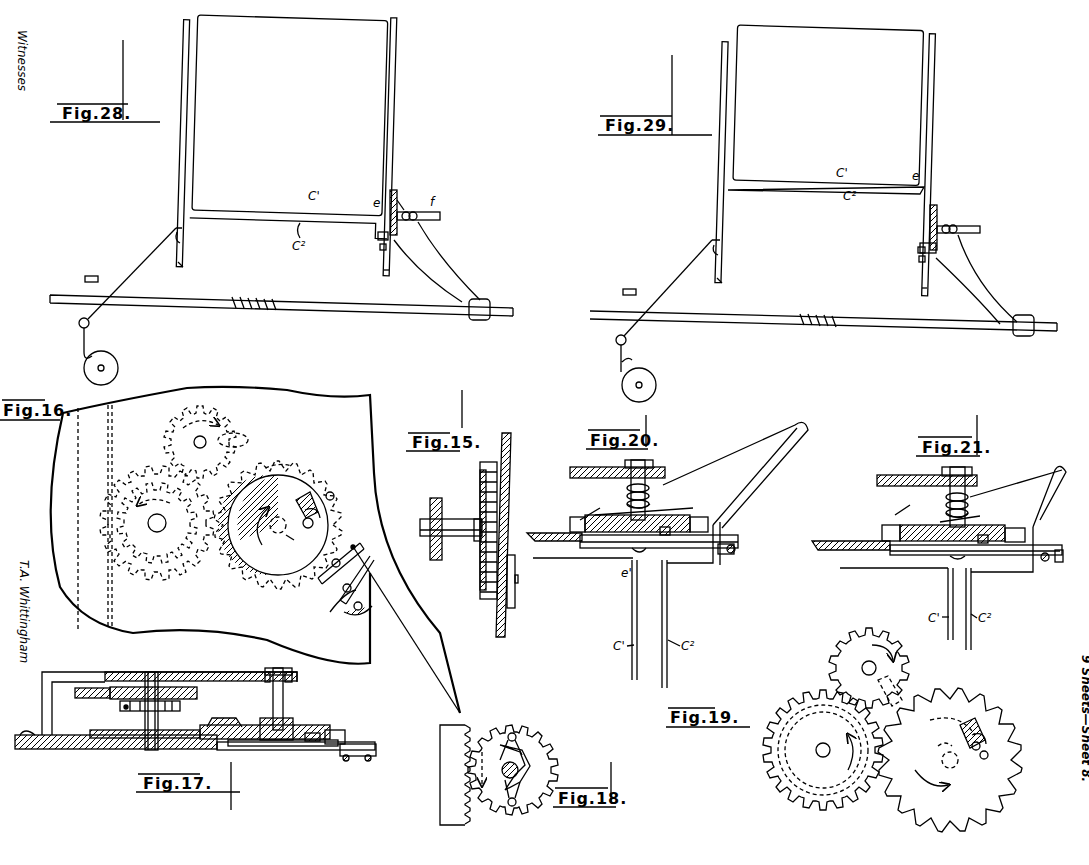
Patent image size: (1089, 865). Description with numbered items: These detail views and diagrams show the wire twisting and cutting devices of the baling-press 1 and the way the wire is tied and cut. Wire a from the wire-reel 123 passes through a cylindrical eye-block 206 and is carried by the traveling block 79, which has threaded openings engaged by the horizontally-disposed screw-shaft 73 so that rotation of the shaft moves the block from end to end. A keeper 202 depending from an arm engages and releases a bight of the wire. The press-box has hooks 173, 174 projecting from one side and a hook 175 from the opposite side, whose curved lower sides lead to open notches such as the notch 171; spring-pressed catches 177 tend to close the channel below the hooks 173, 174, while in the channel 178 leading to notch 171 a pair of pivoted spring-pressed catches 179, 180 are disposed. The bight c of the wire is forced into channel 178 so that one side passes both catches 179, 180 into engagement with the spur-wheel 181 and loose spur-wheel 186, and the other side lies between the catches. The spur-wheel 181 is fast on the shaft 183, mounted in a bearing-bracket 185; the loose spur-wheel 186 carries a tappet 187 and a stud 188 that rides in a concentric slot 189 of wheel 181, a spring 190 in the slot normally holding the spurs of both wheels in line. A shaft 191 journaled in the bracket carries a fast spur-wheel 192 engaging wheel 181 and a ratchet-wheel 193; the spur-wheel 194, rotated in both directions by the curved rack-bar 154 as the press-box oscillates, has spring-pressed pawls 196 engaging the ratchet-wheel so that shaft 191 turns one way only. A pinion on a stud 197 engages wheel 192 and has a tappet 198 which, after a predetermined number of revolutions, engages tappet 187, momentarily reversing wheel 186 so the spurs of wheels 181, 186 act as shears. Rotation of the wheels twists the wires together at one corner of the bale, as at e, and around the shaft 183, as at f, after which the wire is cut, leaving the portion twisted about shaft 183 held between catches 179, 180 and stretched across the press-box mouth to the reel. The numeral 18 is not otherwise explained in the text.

In FIG. 28, the baling-press 1 is at (184, 76).
In FIG. 16, the baling-press 1 is at (372, 402).
In FIG. 17, the baling-press 1 is at (58, 749).
In FIG. 20, the baling-press 1 is at (540, 540).
In FIG. 21, the baling-press 1 is at (832, 543).
In FIG. 28, the rod 18 is at (440, 214).
In FIG. 28, the screw-shaft 73 is at (318, 302).
In FIG. 29, the screw-shaft 73 is at (765, 315).
In FIG. 28, the traveling block 79 is at (478, 320).
In FIG. 29, the traveling block 79 is at (1022, 336).
In FIG. 28, the wire-reel 123 is at (116, 358).
In FIG. 29, the wire-reel 123 is at (622, 382).
In FIG. 16, the curved rack-bar 154 is at (78, 477).
In FIG. 17, the curved rack-bar 154 is at (95, 698).
In FIG. 18, the curved rack-bar 154 is at (441, 766).
In FIG. 16, the open notch 171 is at (312, 482).
In FIG. 17, the open notch 171 is at (281, 750).
In FIG. 15, the open notch 171 is at (508, 516).
In FIG. 20, the open notch 171 is at (590, 548).
In FIG. 21, the open notch 171 is at (902, 556).
In FIG. 28, the hook 173 is at (185, 260).
In FIG. 29, the hook 173 is at (724, 274).
In FIG. 28, the hook 174 is at (378, 236).
In FIG. 28, the hook 175 is at (388, 272).
In FIG. 29, the hook 175 is at (927, 290).
In FIG. 16, the hook 175 is at (440, 633).
In FIG. 15, the hook 175 is at (442, 632).
In FIG. 28, the spring-pressed catch 177 is at (182, 240).
In FIG. 29, the spring-pressed catch 177 is at (724, 248).
In FIG. 16, the channel 178 is at (378, 618).
In FIG. 15, the channel 178 is at (500, 548).
In FIG. 29, the spring-pressed catch 179 is at (918, 250).
In FIG. 16, the spring-pressed catch 179 is at (358, 560).
In FIG. 17, the spring-pressed catch 179 is at (355, 763).
In FIG. 15, the spring-pressed catch 179 is at (516, 592).
In FIG. 20, the spring-pressed catch 179 is at (712, 560).
In FIG. 21, the spring-pressed catch 179 is at (1024, 572).
In FIG. 28, the spring-pressed catch 180 is at (383, 250).
In FIG. 29, the spring-pressed catch 180 is at (920, 262).
In FIG. 16, the spring-pressed catch 180 is at (370, 577).
In FIG. 17, the spring-pressed catch 180 is at (378, 755).
In FIG. 20, the spring-pressed catch 180 is at (740, 549).
In FIG. 21, the spring-pressed catch 180 is at (1058, 552).
In FIG. 28, the spur-wheel 181 is at (398, 200).
In FIG. 29, the spur-wheel 181 is at (930, 216).
In FIG. 16, the spur-wheel 181 is at (278, 525).
In FIG. 17, the spur-wheel 181 is at (250, 742).
In FIG. 15, the spur-wheel 181 is at (497, 497).
In FIG. 20, the spur-wheel 181 is at (622, 548).
In FIG. 21, the spur-wheel 181 is at (938, 556).
In FIG. 19, the spur-wheel 181 is at (950, 760).
In FIG. 29, the shaft 183 is at (978, 228).
In FIG. 16, the shaft 183 is at (290, 538).
In FIG. 17, the shaft 183 is at (290, 707).
In FIG. 15, the shaft 183 is at (460, 525).
In FIG. 20, the shaft 183 is at (652, 476).
In FIG. 21, the shaft 183 is at (948, 492).
In FIG. 19, the shaft 183 is at (958, 766).
In FIG. 15, the bearing-bracket 185 is at (434, 498).
In FIG. 20, the bearing-bracket 185 is at (600, 467).
In FIG. 21, the bearing-bracket 185 is at (912, 475).
In FIG. 29, the loose spur-wheel 186 is at (940, 240).
In FIG. 17, the loose spur-wheel 186 is at (318, 730).
In FIG. 15, the loose spur-wheel 186 is at (482, 500).
In FIG. 20, the loose spur-wheel 186 is at (680, 519).
In FIG. 21, the loose spur-wheel 186 is at (1000, 528).
In FIG. 19, the loose spur-wheel 186 is at (962, 693).
In FIG. 16, the tappet 187 is at (284, 453).
In FIG. 17, the tappet 187 is at (222, 718).
In FIG. 19, the tappet 187 is at (936, 748).
In FIG. 16, the stud 188 is at (312, 524).
In FIG. 17, the stud 188 is at (318, 746).
In FIG. 20, the stud 188 is at (662, 548).
In FIG. 21, the stud 188 is at (985, 556).
In FIG. 19, the stud 188 is at (982, 746).
In FIG. 16, the concentric slot 189 is at (336, 494).
In FIG. 19, the concentric slot 189 is at (990, 755).
In FIG. 16, the spring 190 is at (302, 503).
In FIG. 19, the spring 190 is at (980, 728).
In FIG. 16, the shaft 191 is at (163, 527).
In FIG. 17, the shaft 191 is at (155, 750).
In FIG. 18, the shaft 191 is at (530, 768).
In FIG. 19, the shaft 191 is at (818, 754).
In FIG. 16, the spur-wheel 192 is at (188, 576).
In FIG. 17, the spur-wheel 192 is at (120, 742).
In FIG. 19, the spur-wheel 192 is at (815, 700).
In FIG. 17, the ratchet-wheel 193 is at (148, 710).
In FIG. 18, the ratchet-wheel 193 is at (525, 758).
In FIG. 16, the spur-wheel 194 is at (157, 514).
In FIG. 17, the spur-wheel 194 is at (130, 687).
In FIG. 18, the spur-wheel 194 is at (535, 733).
In FIG. 19, the spur-wheel 194 is at (782, 788).
In FIG. 16, the spring-pressed pawl 196 is at (238, 424).
In FIG. 17, the spring-pressed pawl 196 is at (122, 708).
In FIG. 18, the spring-pressed pawl 196 is at (504, 727).
In FIG. 19, the spring-pressed pawl 196 is at (912, 662).
In FIG. 16, the stud 197 is at (195, 441).
In FIG. 19, the stud 197 is at (862, 668).
In FIG. 16, the tappet 198 is at (250, 441).
In FIG. 19, the tappet 198 is at (898, 700).
In FIG. 28, the keeper 202 is at (97, 270).
In FIG. 29, the keeper 202 is at (635, 283).
In FIG. 28, the eye-block 206 is at (90, 324).
In FIG. 29, the eye-block 206 is at (615, 342).
In FIG. 28, the wire a is at (79, 343).
In FIG. 29, the wire a is at (629, 358).
In FIG. 28, the bight c is at (437, 262).
In FIG. 29, the bight c is at (976, 279).
In FIG. 21, the twisted junction e is at (933, 596).
In FIG. 20, the twist about shaft f is at (625, 494).
In FIG. 21, the twist about shaft f is at (970, 513).